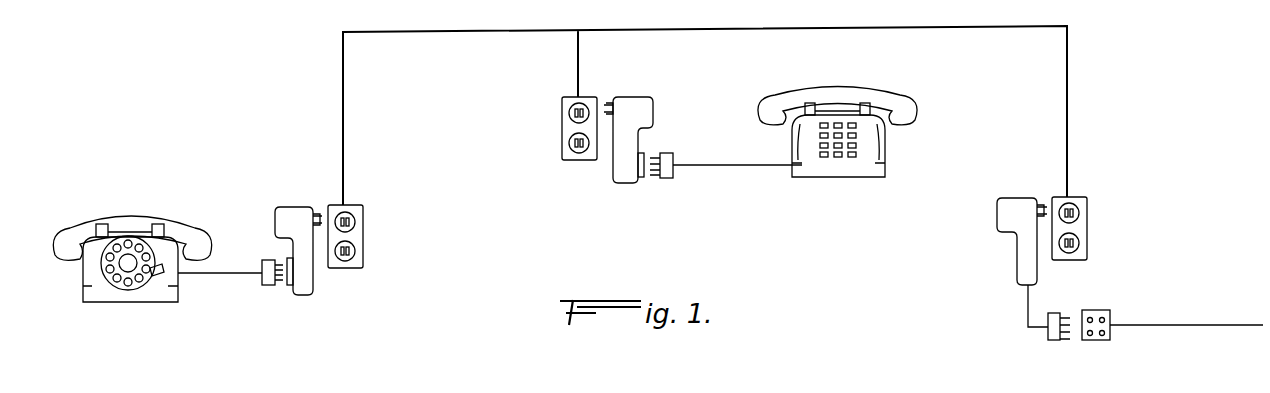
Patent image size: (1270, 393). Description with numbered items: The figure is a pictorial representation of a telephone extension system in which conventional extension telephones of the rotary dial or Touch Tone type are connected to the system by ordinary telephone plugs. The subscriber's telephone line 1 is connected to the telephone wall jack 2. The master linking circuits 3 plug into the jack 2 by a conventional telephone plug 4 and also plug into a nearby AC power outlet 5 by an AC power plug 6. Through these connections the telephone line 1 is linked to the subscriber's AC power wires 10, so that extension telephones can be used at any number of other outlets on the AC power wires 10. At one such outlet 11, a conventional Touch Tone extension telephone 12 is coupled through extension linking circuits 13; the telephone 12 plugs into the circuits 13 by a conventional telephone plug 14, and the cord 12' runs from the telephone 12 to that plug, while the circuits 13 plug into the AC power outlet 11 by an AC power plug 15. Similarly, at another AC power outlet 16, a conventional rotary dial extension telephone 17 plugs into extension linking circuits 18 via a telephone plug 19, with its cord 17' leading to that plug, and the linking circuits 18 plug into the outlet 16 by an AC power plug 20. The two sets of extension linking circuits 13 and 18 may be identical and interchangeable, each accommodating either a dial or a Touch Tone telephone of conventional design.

The telephone line 1 is at (1153, 325).
The telephone wall jack 2 is at (1105, 342).
The master linking circuits 3 is at (1017, 276).
The telephone plug 4 is at (1048, 341).
The AC power outlet 5 is at (1087, 212).
The AC power plug 6 is at (1041, 205).
The AC power wires 10 is at (343, 126).
The AC power outlet 11 is at (562, 146).
The Touch Tone extension telephone 12 is at (841, 165).
The phone cord 12' is at (737, 145).
The extension linking circuits 13 is at (653, 119).
The telephone plug 14 is at (664, 180).
The AC power plug 15 is at (606, 101).
The AC power outlet 16 is at (365, 218).
The rotary dial extension telephone 17 is at (123, 292).
The phone cord 17' is at (220, 254).
The extension linking circuits 18 is at (313, 285).
The telephone plug 19 is at (270, 288).
The AC power plug 20 is at (318, 211).